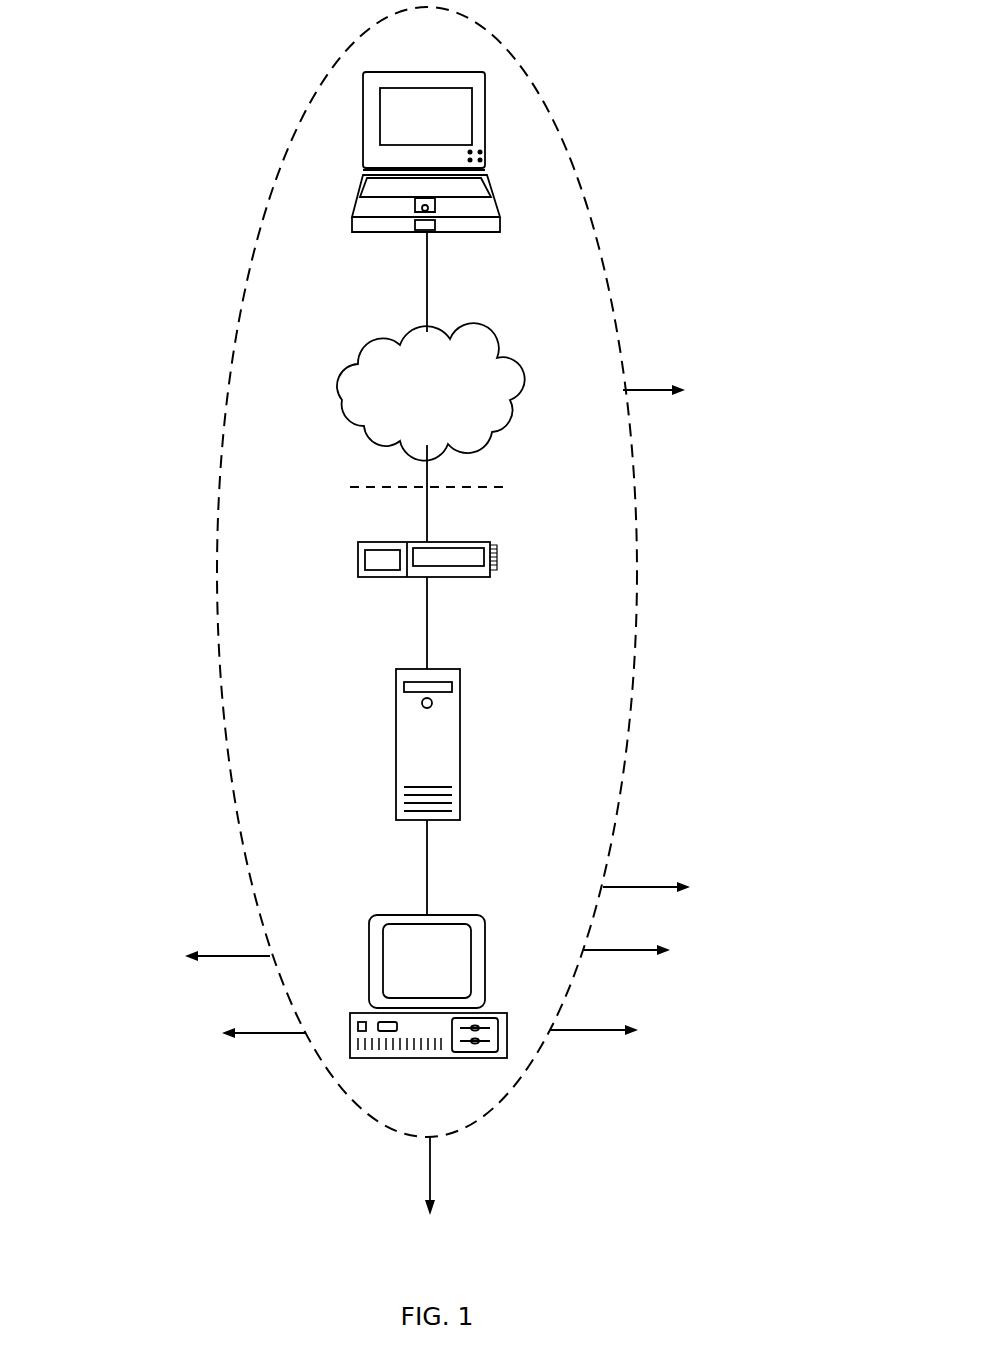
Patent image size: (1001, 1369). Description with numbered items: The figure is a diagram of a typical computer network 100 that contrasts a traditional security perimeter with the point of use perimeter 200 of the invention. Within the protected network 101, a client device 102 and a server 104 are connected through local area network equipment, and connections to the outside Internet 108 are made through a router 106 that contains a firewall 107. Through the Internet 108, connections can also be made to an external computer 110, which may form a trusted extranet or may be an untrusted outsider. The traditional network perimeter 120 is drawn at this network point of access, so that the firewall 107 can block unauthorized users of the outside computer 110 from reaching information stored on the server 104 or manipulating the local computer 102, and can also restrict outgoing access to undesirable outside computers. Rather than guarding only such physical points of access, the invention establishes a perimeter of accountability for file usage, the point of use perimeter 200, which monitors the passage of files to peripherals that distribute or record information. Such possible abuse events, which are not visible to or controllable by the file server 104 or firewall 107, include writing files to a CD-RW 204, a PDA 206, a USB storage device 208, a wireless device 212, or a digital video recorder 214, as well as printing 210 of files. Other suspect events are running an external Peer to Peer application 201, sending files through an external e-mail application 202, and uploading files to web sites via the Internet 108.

The computer network 100 is at (145, 41).
The network 101 is at (590, 652).
The client device 102 is at (455, 913).
The server 104 is at (396, 728).
The router 106 is at (465, 541).
The firewall 107 is at (365, 560).
The Internet 108 is at (408, 399).
The external computer 110 is at (363, 135).
The network perimeter 120 is at (350, 487).
The point of use perimeter 200 is at (250, 889).
The Peer to Peer application 201 is at (777, 392).
The e-mail application 202 is at (803, 417).
The CD-RW 204 is at (812, 899).
The PDA 206 is at (771, 962).
The USB storage device 208 is at (855, 1042).
The printing 210 is at (411, 1267).
The wireless device 212 is at (212, 1042).
The digital video recorder 214 is at (180, 965).